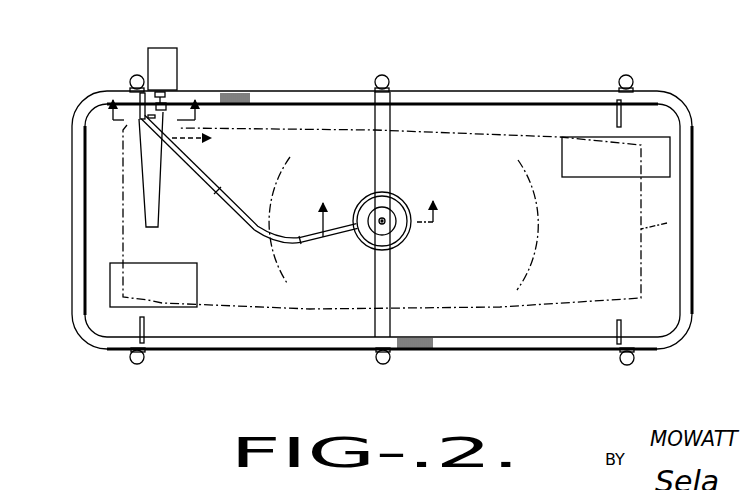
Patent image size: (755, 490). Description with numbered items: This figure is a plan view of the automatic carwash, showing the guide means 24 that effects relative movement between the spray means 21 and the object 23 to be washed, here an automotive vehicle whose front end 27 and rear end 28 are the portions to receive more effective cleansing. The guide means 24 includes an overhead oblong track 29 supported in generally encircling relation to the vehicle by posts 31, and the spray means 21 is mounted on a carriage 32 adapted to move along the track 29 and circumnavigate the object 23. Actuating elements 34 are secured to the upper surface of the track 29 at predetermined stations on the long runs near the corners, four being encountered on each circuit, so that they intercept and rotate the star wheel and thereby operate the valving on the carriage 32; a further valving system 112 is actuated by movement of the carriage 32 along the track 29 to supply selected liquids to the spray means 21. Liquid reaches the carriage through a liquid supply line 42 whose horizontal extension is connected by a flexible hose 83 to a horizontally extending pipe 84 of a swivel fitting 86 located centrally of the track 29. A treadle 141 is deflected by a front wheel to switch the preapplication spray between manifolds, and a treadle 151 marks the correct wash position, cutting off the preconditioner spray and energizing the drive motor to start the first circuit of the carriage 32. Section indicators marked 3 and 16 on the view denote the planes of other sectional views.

The guide means 24 is at (684, 101).
The overhead oblong track 29 is at (463, 93).
The posts 31 is at (386, 76).
The actuating elements 34 is at (150, 93).
The valving system 112 is at (179, 47).
The carriage 32 is at (133, 142).
The section line 3- 3 is at (154, 119).
The object 23 is at (520, 235).
The spray means 21 is at (118, 193).
The front end 27 is at (100, 237).
The liquid supply line 42 is at (204, 178).
The flexible hose 83 is at (252, 229).
The horizontally extending pipe 84 is at (312, 245).
The swivel fitting 86 is at (393, 233).
The section arrows 16- 16 is at (382, 203).
The treadle 141 is at (608, 178).
The rear end 28 is at (667, 223).
The treadle 151 is at (162, 296).